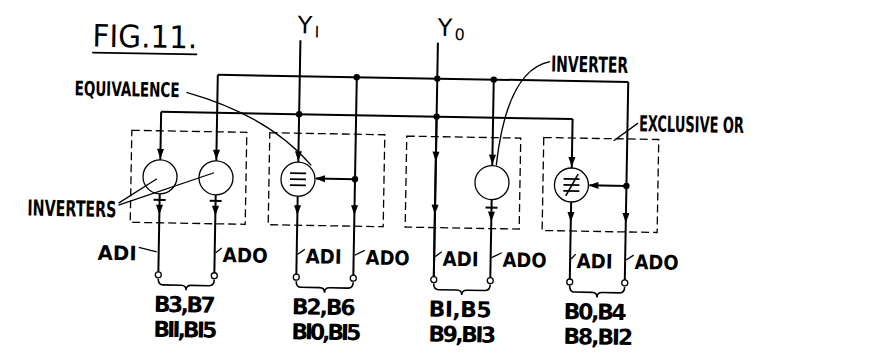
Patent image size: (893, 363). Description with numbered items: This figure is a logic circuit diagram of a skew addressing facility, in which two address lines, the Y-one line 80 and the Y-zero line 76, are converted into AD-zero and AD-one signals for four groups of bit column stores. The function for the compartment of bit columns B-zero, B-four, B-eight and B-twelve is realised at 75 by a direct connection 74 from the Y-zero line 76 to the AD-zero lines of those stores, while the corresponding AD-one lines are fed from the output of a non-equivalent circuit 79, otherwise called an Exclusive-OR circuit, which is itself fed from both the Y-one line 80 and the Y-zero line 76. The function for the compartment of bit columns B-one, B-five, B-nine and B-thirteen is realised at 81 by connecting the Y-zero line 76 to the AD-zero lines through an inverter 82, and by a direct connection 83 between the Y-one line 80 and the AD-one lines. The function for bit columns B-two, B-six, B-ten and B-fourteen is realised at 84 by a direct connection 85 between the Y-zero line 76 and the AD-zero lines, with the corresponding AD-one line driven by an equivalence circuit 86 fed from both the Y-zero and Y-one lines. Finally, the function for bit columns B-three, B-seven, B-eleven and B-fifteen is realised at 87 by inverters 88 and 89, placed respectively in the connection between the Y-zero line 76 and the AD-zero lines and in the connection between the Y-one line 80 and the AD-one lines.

The direct connection 74 is at (628, 245).
The compartment function circuit 75 is at (658, 183).
The Y0 line 76 is at (440, 62).
The non-equivalent circuit 79 is at (582, 173).
The Y1 line 80 is at (303, 62).
The compartment function circuit 81 is at (507, 136).
The inverter 82 is at (481, 176).
The ADI line 83 is at (437, 199).
The compartment function circuit 84 is at (378, 134).
The direct connection 85 is at (352, 198).
The equivalence circuit 86 is at (309, 206).
The compartment function circuit 87 is at (130, 139).
The inverter 88 is at (203, 173).
The inverter 89 is at (143, 177).